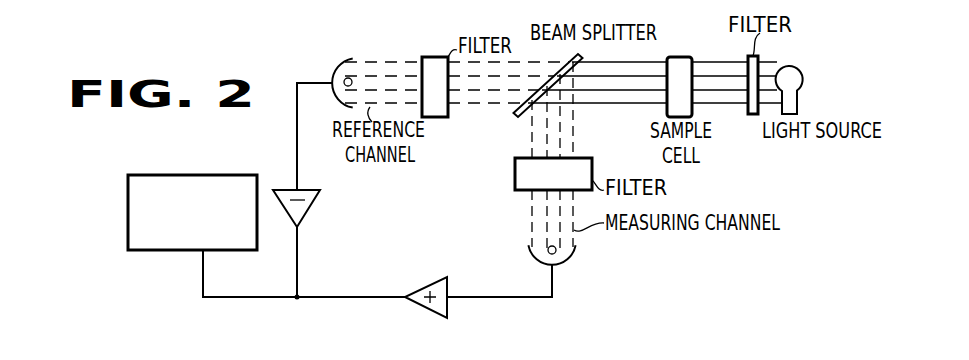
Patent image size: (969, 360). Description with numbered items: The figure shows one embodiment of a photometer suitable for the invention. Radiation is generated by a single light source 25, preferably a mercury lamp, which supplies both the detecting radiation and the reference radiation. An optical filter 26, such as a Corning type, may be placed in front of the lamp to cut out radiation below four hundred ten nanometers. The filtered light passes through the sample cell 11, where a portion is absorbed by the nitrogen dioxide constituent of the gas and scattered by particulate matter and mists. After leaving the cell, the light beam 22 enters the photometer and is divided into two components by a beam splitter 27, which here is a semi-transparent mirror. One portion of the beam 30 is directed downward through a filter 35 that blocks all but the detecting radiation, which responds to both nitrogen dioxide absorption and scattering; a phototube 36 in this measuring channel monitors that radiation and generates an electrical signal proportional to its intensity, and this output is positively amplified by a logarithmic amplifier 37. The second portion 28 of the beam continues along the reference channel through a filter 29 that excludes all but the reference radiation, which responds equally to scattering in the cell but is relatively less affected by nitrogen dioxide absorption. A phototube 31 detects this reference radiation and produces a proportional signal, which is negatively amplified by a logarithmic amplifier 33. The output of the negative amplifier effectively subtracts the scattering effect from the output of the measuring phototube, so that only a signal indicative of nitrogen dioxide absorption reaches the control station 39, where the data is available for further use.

The sample cell 11 is at (687, 90).
The light beam 22 is at (723, 78).
The light source 25 is at (803, 73).
The optical filter 26 is at (758, 64).
The beam splitter 27 is at (580, 56).
The second portion of the beam 28 is at (475, 90).
The filter 29 is at (434, 58).
The beam 30 is at (570, 128).
The phototube 31 is at (333, 72).
The logarithmic amplifier 33 is at (310, 212).
The filter 35 is at (564, 182).
The phototube 36 is at (560, 266).
The logarithmic amplifier 37 is at (447, 281).
The control station 39 is at (200, 199).